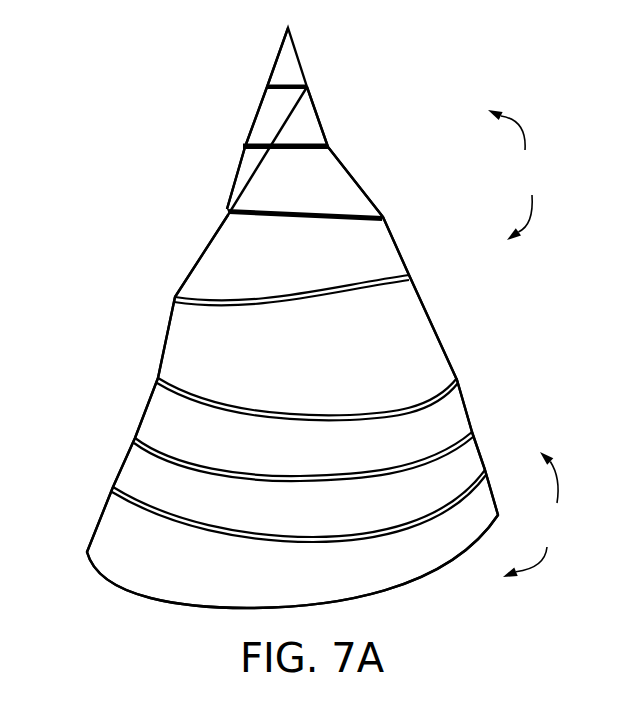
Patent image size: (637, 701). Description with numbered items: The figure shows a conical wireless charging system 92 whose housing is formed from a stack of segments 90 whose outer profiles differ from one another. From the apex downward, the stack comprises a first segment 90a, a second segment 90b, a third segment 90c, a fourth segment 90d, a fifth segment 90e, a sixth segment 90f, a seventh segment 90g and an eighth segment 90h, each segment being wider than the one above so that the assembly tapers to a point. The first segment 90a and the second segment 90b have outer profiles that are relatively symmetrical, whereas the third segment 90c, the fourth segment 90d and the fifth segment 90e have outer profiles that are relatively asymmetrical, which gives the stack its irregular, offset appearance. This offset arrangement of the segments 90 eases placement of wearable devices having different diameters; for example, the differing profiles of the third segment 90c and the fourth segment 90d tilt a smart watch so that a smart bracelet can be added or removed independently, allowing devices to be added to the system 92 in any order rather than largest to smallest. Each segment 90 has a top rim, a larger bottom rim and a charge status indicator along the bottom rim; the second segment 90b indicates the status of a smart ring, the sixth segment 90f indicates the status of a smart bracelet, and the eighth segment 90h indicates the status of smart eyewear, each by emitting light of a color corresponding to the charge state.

The wireless charging system 92 is at (263, 42).
The segments 90 is at (533, 343).
The first segment 90a is at (292, 62).
The second segment 90b is at (265, 113).
The third segment 90c is at (347, 182).
The fourth segment 90d is at (208, 257).
The fifth segment 90e is at (415, 328).
The sixth segment 90f is at (150, 403).
The seventh segment 90g is at (463, 452).
The eighth segment 90h is at (425, 567).